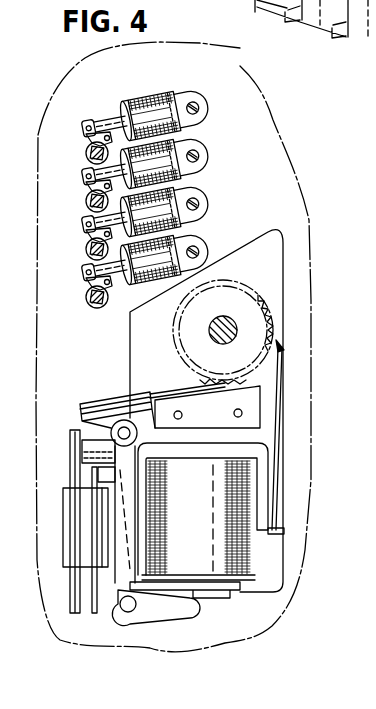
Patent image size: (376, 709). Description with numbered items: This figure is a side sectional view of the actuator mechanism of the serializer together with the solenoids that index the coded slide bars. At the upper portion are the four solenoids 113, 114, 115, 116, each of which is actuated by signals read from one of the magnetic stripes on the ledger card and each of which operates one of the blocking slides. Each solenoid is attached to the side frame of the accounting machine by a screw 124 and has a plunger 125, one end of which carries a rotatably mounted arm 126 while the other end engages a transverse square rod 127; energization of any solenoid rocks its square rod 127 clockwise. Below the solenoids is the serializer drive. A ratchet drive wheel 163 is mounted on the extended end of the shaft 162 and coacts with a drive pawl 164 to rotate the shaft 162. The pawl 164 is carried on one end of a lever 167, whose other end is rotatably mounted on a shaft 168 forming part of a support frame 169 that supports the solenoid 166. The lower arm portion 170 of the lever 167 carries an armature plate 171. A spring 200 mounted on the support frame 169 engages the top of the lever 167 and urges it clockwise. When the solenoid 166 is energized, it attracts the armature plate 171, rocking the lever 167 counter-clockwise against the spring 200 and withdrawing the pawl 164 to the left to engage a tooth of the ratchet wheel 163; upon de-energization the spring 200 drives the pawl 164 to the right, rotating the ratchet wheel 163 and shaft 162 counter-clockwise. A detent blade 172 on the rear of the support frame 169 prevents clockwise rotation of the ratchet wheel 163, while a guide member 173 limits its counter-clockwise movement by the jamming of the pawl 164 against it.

The solenoid 113 is at (146, 93).
The solenoid 114 is at (175, 156).
The solenoid 115 is at (175, 203).
The solenoid 116 is at (175, 250).
The screw 124 is at (194, 101).
The plunger 125 is at (110, 117).
The arm 126 is at (88, 136).
The square rod 127 is at (88, 152).
The shaft 162 is at (214, 319).
The ratchet drive wheel 163 is at (258, 292).
The drive pawl 164 is at (178, 392).
The solenoid 166 is at (282, 541).
The lever 167 is at (107, 400).
The shaft 168 is at (119, 604).
The support frame 169 is at (260, 437).
The arm portion 170 is at (197, 612).
The armature plate 171 is at (229, 588).
The detent blade 172 is at (281, 375).
The guide member 173 is at (258, 398).
The spring 200 is at (78, 447).